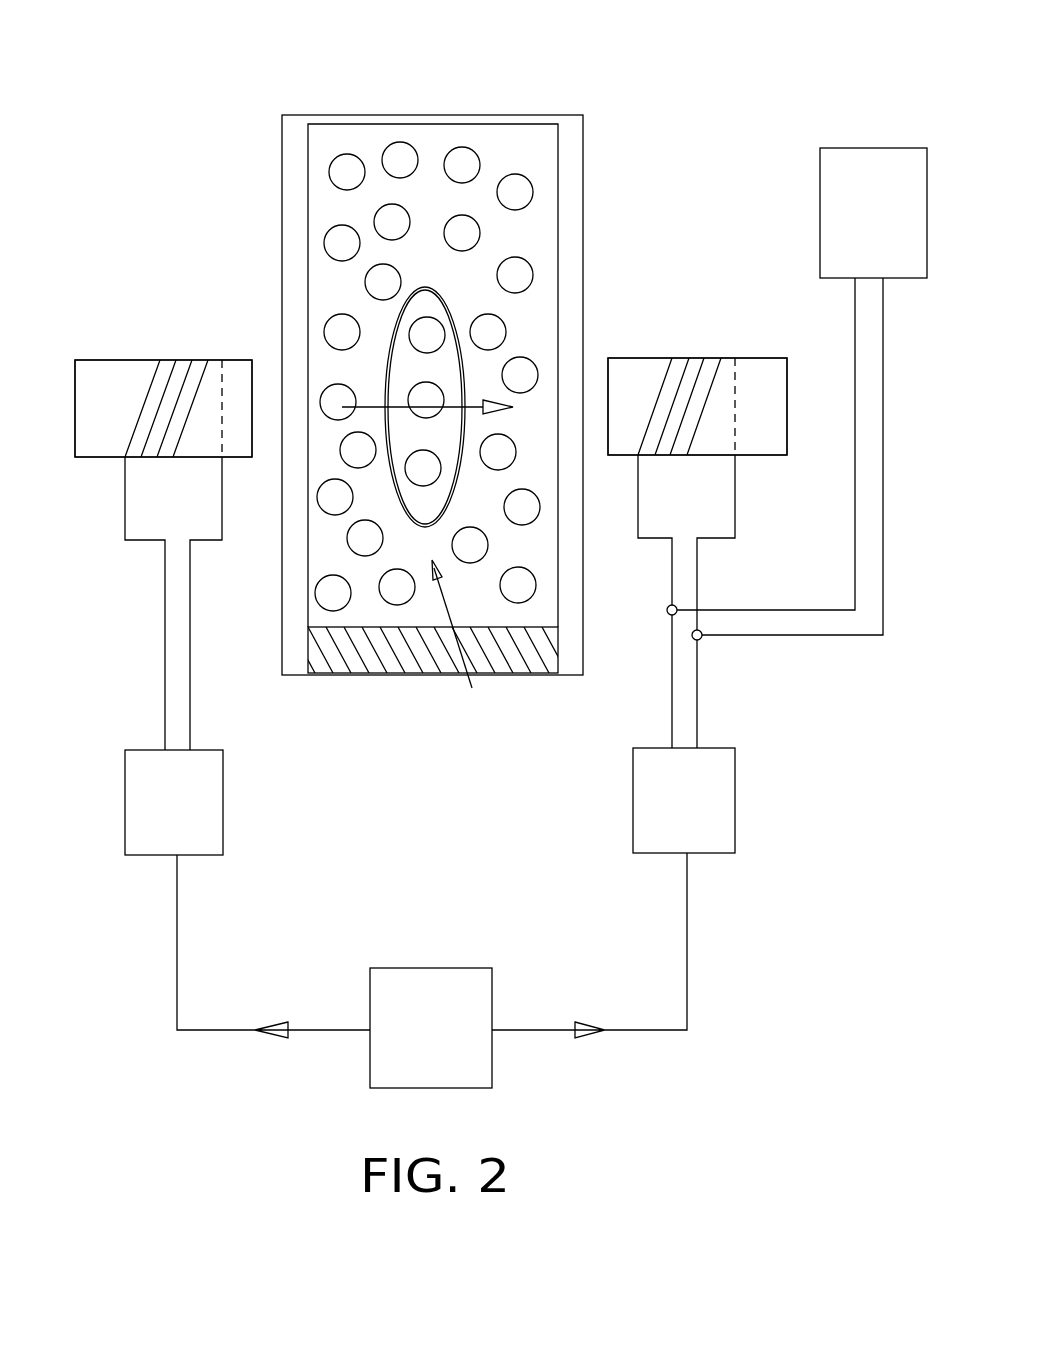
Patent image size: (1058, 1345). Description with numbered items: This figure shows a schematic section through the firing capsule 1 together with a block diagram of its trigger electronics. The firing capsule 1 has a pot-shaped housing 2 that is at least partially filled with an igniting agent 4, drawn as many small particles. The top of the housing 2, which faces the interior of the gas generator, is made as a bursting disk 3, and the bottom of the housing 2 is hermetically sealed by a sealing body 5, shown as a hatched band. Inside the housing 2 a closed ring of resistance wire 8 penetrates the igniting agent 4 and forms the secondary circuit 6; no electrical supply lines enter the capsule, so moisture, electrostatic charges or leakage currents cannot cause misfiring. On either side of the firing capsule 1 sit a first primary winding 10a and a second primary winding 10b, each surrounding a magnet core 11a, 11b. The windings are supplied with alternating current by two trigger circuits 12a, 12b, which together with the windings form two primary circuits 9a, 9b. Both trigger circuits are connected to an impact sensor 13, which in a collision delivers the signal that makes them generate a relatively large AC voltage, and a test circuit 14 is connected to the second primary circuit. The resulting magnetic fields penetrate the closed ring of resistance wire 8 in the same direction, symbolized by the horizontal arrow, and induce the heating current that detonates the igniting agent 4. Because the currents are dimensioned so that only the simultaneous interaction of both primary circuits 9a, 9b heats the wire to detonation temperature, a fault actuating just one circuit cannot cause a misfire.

The firing capsule 1 is at (617, 88).
The housing 2 is at (295, 214).
The bursting disk 3 is at (326, 114).
The igniting agent 4 is at (532, 267).
The sealing body 5 is at (395, 662).
The secondary circuit 6 is at (464, 649).
The resistance wire 8 is at (430, 287).
The first primary circuit 9a is at (152, 572).
The second primary circuit 9b is at (713, 573).
The first primary winding 10a is at (175, 360).
The second primary winding 10b is at (697, 358).
The magnet core 11a is at (102, 435).
The magnet core 11b is at (767, 432).
The trigger circuit 12a is at (198, 816).
The trigger circuit 12b is at (708, 817).
The impact sensor 13 is at (448, 1038).
The test circuit 14 is at (892, 227).